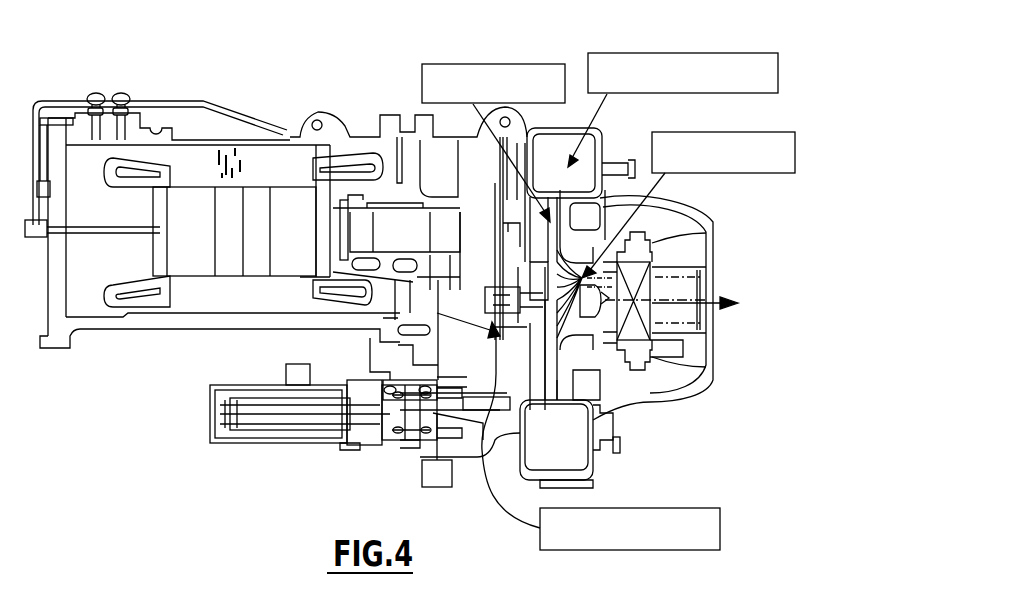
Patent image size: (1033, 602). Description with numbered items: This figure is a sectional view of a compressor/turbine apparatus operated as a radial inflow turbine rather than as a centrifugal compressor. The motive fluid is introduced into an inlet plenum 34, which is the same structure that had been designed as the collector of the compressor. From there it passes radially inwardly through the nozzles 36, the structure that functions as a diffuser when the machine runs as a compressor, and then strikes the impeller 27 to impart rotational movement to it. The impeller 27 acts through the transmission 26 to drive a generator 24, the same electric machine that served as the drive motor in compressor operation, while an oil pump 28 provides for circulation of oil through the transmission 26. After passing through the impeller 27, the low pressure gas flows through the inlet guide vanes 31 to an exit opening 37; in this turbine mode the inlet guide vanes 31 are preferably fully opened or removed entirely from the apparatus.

The generator 24 is at (208, 250).
The transmission 26 is at (657, 552).
The impeller 27 is at (795, 140).
The oil pump 28 is at (218, 468).
The inlet guide vanes 31 is at (643, 367).
The inlet plenum 34 is at (780, 62).
The nozzles 36 is at (453, 63).
The exit opening 37 is at (778, 290).